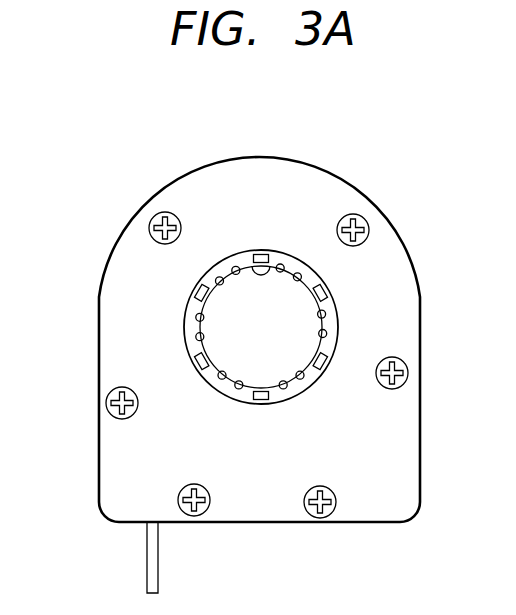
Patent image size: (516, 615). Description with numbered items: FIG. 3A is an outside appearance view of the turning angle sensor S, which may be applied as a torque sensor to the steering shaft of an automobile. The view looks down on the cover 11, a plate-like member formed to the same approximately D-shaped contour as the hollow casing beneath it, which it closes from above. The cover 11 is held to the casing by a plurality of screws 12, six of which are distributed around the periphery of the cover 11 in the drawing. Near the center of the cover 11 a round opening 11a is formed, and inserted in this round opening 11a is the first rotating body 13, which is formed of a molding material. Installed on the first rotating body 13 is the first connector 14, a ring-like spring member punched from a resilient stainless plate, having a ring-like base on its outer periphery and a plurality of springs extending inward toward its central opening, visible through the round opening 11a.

The turning angle sensor S is at (142, 206).
The cover 11 is at (394, 308).
The round opening 11a is at (290, 254).
The screws 12 is at (368, 226).
The first rotating body 13 is at (280, 252).
The first connector 14 is at (238, 253).